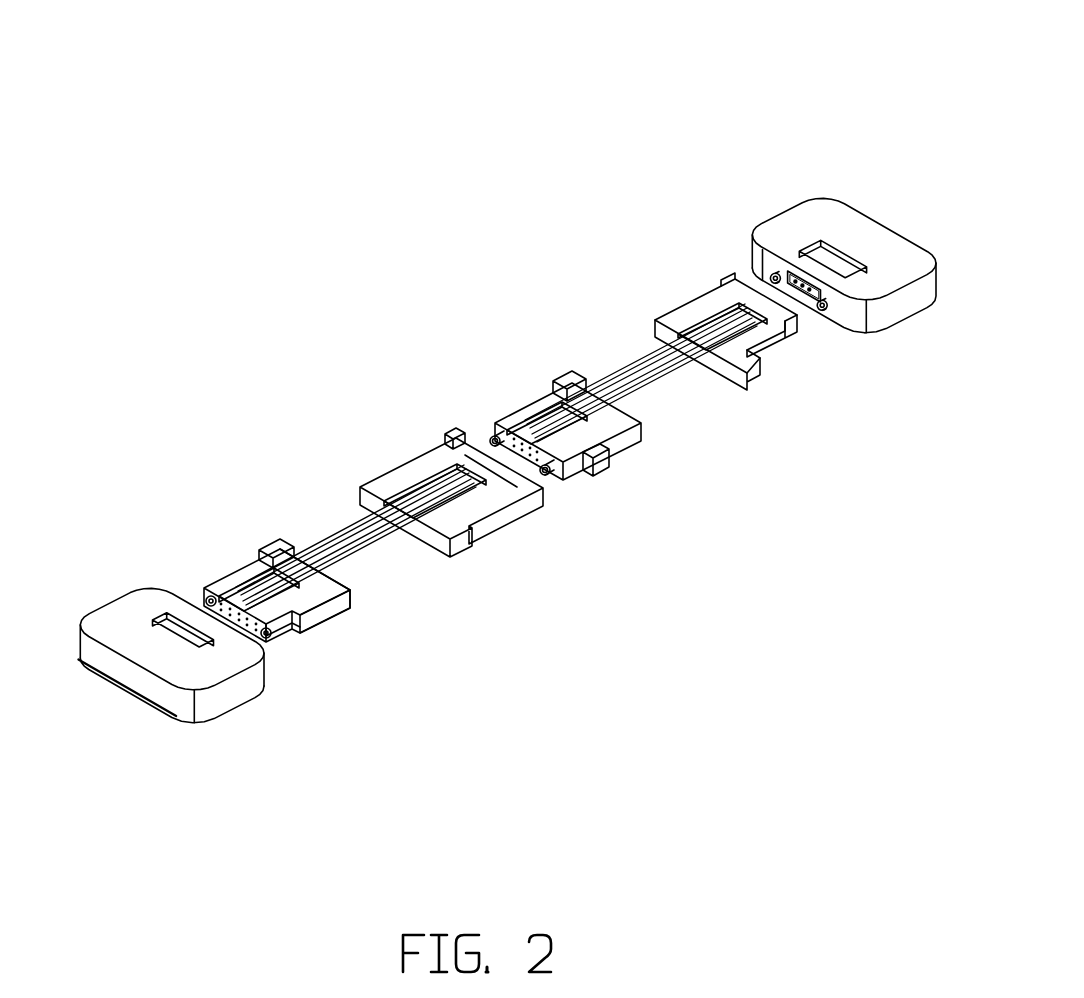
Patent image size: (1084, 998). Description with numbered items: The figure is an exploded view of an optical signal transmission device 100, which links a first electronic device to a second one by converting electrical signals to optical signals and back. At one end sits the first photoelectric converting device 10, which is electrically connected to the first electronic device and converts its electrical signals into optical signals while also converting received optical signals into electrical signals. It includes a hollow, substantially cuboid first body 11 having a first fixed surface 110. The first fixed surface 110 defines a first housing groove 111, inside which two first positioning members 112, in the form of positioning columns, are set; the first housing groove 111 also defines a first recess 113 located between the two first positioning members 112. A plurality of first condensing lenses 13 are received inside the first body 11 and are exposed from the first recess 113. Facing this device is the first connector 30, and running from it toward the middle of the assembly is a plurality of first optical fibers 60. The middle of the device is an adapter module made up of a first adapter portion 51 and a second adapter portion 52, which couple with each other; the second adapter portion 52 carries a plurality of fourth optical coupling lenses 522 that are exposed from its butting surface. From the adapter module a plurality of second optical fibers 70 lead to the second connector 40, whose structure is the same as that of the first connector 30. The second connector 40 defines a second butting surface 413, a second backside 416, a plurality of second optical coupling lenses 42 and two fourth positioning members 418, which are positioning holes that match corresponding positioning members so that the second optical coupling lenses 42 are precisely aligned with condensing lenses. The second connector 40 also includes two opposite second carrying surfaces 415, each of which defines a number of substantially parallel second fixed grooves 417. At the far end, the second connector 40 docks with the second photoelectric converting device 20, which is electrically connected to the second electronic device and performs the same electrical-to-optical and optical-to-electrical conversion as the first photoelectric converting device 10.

The optical signal transmission device 100 is at (396, 69).
The first photoelectric converting device 10 is at (811, 276).
The first body 11 is at (902, 306).
The first fixed surface 110 is at (845, 323).
The first housing groove 111 is at (771, 260).
The first positioning members 112 is at (773, 273).
The first recess 113 is at (812, 294).
The first condensing lenses 13 is at (813, 266).
The first connector 30 is at (668, 318).
The first optical fibers 60 is at (672, 393).
The second adapter portion 52 is at (515, 419).
The fourth optical coupling lenses 522 is at (525, 398).
The first adapter portion 51 is at (438, 461).
The second optical fibers 70 is at (402, 548).
The second connector 40 is at (292, 580).
The second carrying surfaces 415 is at (277, 542).
The second fixed grooves 417 is at (262, 570).
The second backside 416 is at (348, 584).
The fourth positioning members 418 is at (204, 600).
The second optical coupling lenses 42 is at (300, 621).
The second butting surface 413 is at (273, 644).
The second photoelectric converting device 20 is at (139, 600).